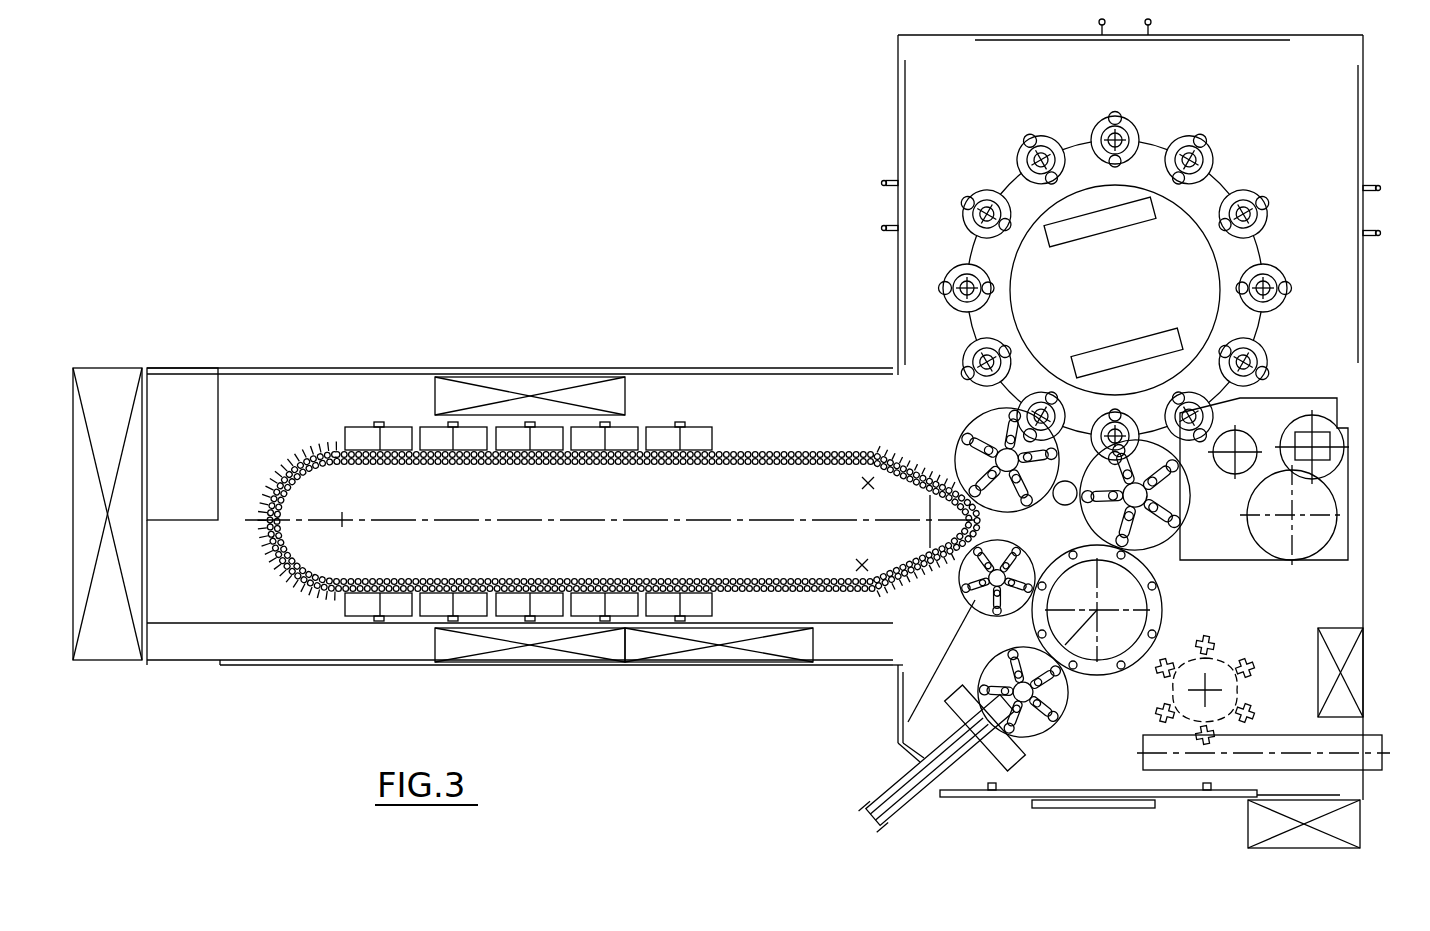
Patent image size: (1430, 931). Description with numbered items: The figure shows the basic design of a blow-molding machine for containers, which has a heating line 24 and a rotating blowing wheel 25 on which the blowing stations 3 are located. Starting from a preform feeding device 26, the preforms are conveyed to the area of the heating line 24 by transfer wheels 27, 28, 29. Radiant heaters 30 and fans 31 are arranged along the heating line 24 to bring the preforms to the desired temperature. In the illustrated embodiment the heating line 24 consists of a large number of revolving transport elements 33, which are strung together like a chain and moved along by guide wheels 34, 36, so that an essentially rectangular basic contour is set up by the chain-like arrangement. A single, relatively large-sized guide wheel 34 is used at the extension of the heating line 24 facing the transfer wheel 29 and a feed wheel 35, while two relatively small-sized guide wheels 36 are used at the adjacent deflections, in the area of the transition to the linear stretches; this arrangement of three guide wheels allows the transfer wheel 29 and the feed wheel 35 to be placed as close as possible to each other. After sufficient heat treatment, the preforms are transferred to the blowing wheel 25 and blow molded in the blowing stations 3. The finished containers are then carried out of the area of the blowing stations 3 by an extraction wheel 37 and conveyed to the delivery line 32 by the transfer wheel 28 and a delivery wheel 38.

The blowing stations 3 is at (953, 263).
The heating line 24 is at (667, 405).
The blowing wheel 25 is at (1040, 203).
The preform feeding device 26 is at (932, 797).
The transfer wheel 27 is at (1047, 730).
The transfer wheel 28 is at (1100, 677).
The transfer wheel 29 is at (898, 707).
The radiant heaters 30 is at (398, 432).
The fans 31 is at (523, 383).
The delivery line 32 is at (1370, 763).
The transport elements 33 is at (308, 583).
The guide wheel 34 is at (343, 527).
The feed wheel 35 is at (975, 415).
The guide wheels 36 is at (866, 481).
The extraction wheel 37 is at (1270, 557).
The delivery wheel 38 is at (1218, 702).